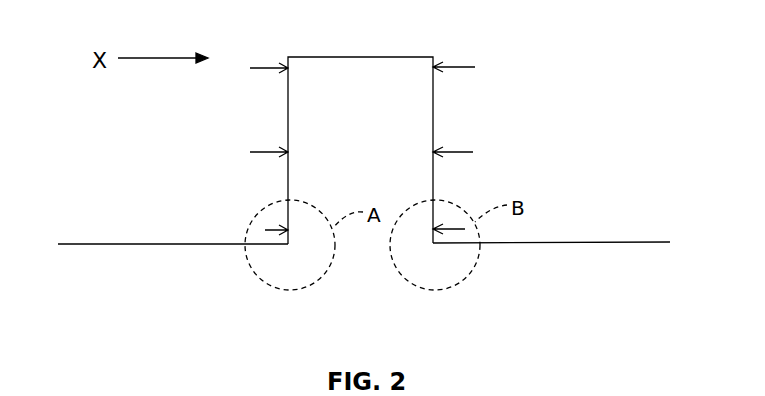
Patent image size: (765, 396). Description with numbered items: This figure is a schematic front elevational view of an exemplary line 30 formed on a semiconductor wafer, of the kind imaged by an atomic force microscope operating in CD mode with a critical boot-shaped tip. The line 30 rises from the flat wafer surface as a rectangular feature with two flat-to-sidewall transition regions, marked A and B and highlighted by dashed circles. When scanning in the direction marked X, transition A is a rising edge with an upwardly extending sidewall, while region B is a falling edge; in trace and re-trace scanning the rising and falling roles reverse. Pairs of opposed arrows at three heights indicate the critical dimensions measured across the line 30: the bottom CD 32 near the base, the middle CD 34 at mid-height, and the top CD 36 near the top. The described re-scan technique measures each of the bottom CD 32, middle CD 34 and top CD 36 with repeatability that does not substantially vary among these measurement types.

The line 30 is at (360, 57).
The bottom CD 32 is at (452, 225).
The middle CD 34 is at (455, 150).
The top CD 36 is at (460, 63).